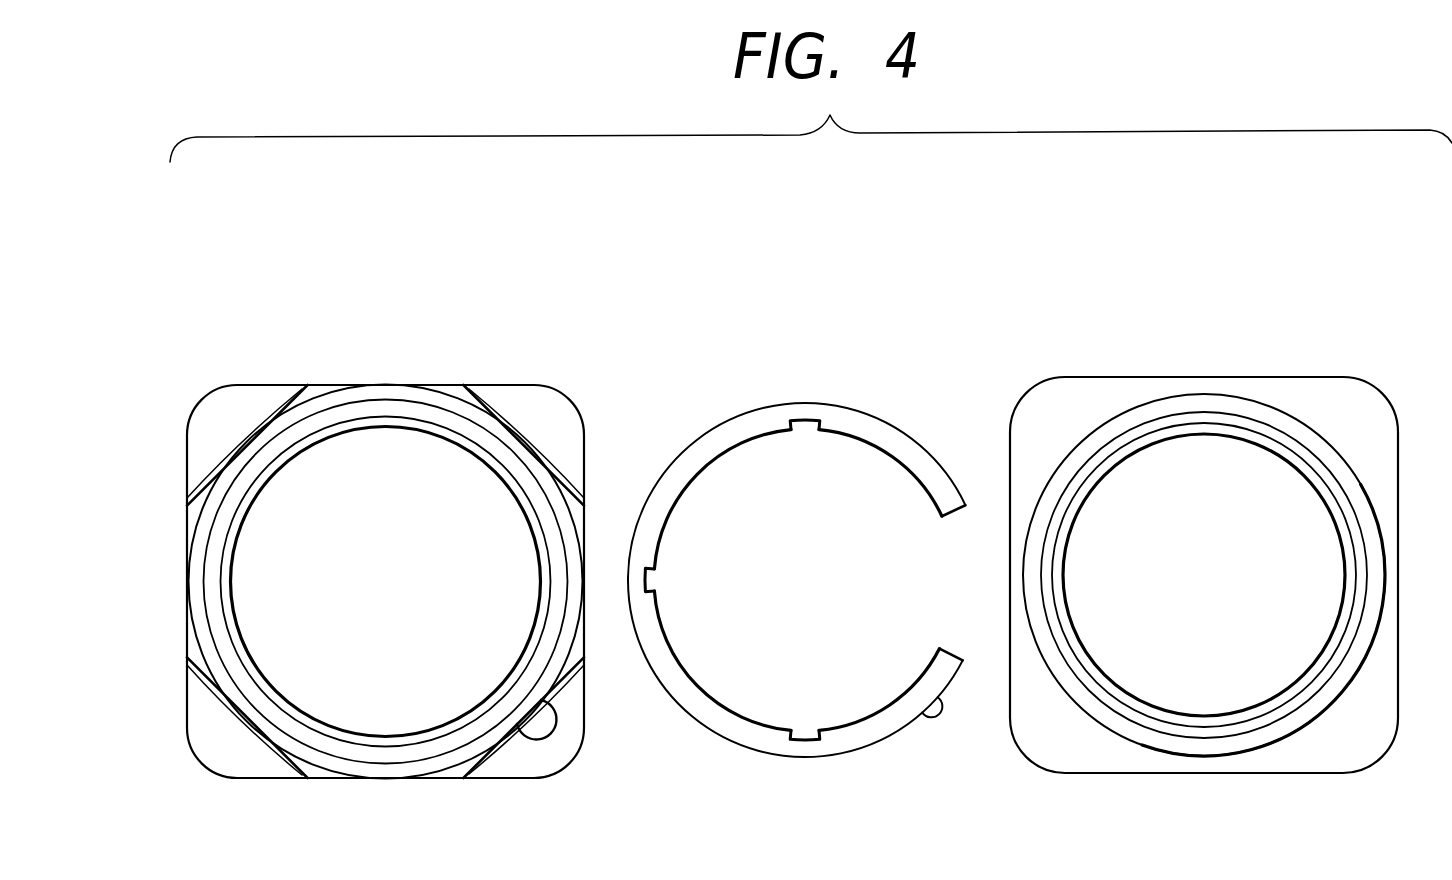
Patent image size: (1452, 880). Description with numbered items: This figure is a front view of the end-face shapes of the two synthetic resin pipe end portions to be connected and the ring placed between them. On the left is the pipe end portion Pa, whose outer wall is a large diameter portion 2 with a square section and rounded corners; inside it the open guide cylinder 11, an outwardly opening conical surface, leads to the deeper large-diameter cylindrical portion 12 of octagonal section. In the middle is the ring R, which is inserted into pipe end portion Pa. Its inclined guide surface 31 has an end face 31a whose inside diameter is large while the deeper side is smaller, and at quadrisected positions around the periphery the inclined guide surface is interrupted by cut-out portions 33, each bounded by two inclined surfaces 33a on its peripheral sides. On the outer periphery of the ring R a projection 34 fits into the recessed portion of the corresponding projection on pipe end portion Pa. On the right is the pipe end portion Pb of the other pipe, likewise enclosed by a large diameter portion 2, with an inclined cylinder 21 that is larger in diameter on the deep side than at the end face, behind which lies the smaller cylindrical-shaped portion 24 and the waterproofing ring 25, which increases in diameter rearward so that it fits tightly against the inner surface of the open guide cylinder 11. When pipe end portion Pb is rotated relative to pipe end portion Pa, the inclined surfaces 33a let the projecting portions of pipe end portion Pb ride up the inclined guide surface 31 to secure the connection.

The large diameter portion 2 is at (535, 412).
The open guide cylinder 11 is at (412, 398).
The large-diameter cylindrical portion 12 is at (316, 390).
The cylindrical-shaped portion 24 is at (545, 733).
The inclined guide surface 31 is at (876, 444).
The end face 31a is at (745, 733).
The cut-out portion 33 is at (800, 428).
The inclined surface 33a is at (660, 587).
The projection 34 is at (933, 722).
The inclined cylinder 21 is at (1181, 426).
The waterproofing ring 25 is at (1247, 405).
The pipe end portion Pa is at (258, 324).
The pipe end portion Pb is at (1337, 345).
The ring R is at (731, 348).